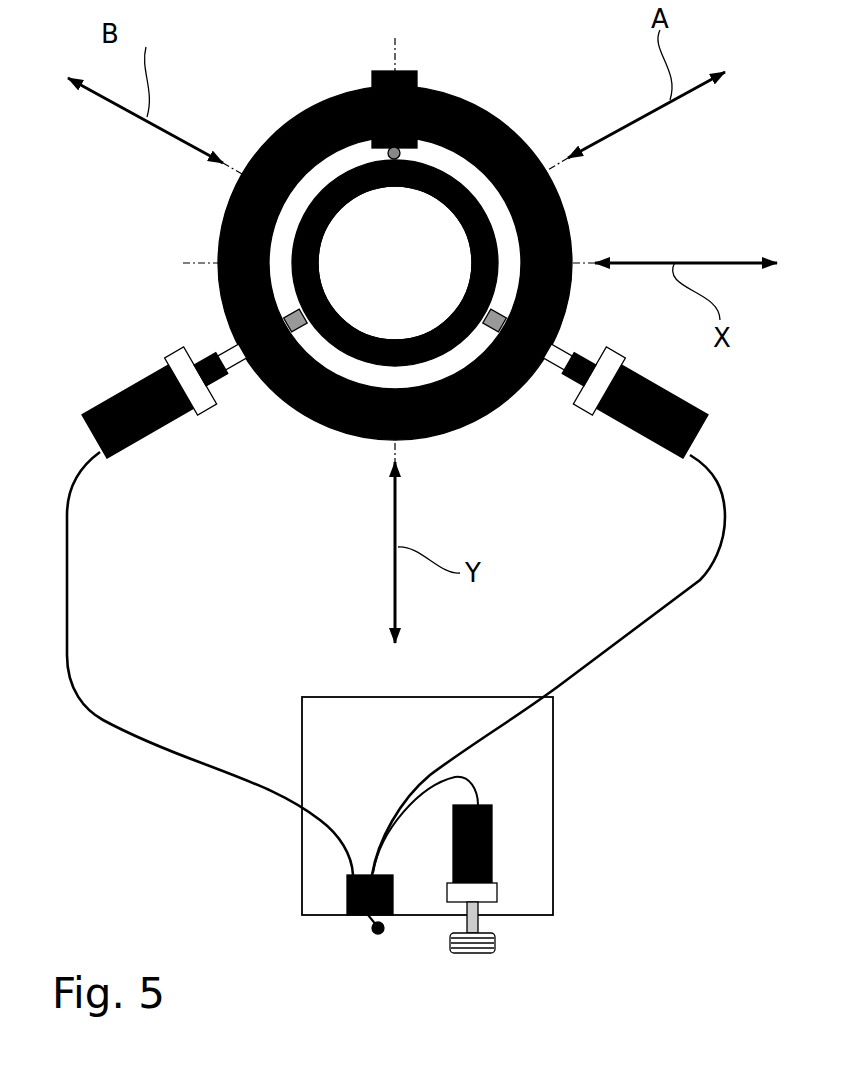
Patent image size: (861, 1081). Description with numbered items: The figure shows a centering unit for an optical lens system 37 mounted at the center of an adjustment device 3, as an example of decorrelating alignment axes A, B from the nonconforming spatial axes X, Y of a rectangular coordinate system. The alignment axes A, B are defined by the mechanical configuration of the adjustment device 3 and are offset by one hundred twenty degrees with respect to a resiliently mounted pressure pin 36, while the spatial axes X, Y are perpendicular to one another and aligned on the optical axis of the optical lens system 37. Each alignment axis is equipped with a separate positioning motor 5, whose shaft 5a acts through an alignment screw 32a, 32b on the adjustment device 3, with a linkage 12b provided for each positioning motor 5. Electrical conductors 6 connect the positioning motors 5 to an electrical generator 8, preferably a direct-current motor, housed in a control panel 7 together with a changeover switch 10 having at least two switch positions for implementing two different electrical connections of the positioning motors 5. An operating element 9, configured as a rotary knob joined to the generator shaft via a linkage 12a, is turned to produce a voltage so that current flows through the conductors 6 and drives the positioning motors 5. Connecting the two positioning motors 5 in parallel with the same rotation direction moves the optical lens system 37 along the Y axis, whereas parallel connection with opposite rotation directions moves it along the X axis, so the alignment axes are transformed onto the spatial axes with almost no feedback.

The adjustment device 3 is at (220, 240).
The positioning motor 5 is at (120, 437).
The shaft 5a is at (223, 375).
The electrical conductor 6 is at (203, 767).
The control panel 7 is at (317, 847).
The electrical generator 8 is at (478, 817).
The operating element 9 is at (448, 950).
The changeover switch 10 is at (347, 900).
The linkage 12a is at (483, 893).
The linkage 12b is at (205, 398).
The alignment screw 32a is at (320, 430).
The alignment screw 32b is at (462, 430).
The pressure pin 36 is at (403, 153).
The optical lens system 37 is at (380, 197).